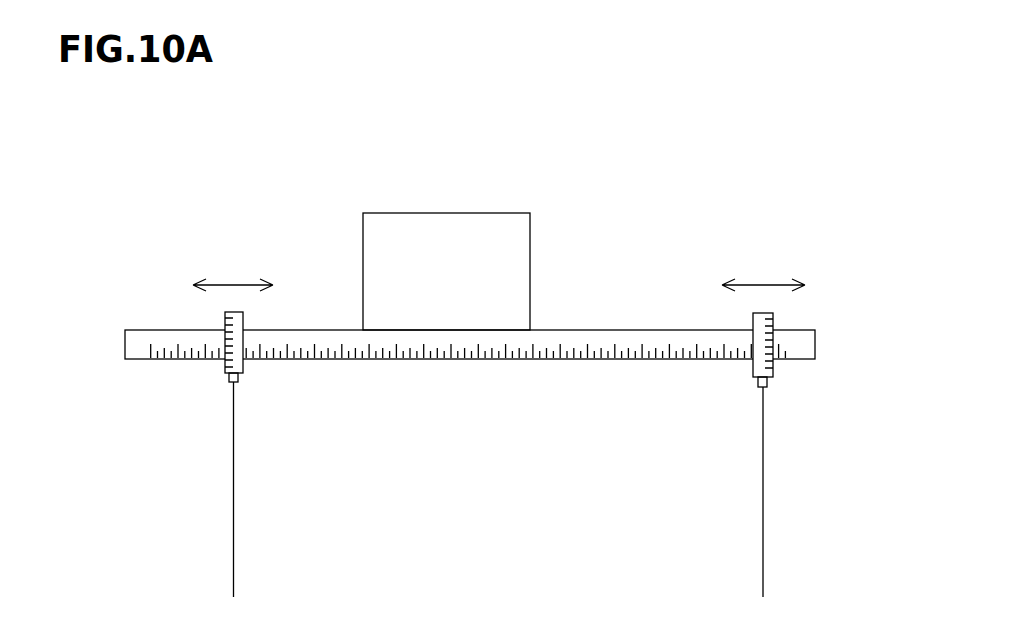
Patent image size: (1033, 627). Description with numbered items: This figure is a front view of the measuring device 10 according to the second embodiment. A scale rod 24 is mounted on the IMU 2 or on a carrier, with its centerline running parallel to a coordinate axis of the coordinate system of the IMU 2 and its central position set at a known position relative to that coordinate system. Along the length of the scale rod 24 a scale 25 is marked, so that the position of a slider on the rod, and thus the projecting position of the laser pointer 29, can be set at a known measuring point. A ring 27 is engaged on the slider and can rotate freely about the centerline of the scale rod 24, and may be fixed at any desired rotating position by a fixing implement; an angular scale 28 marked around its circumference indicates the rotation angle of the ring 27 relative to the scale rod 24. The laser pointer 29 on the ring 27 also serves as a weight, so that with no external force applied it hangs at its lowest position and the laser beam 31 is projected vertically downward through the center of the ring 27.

The IMU 2 is at (530, 272).
The measuring device 10 is at (809, 314).
The scale rod 24 is at (586, 330).
The scale 25 is at (617, 360).
The ring 27 is at (243, 365).
The angular scale 28 is at (225, 324).
The laser pointer 29 is at (238, 381).
The laser beam 31 is at (233, 507).